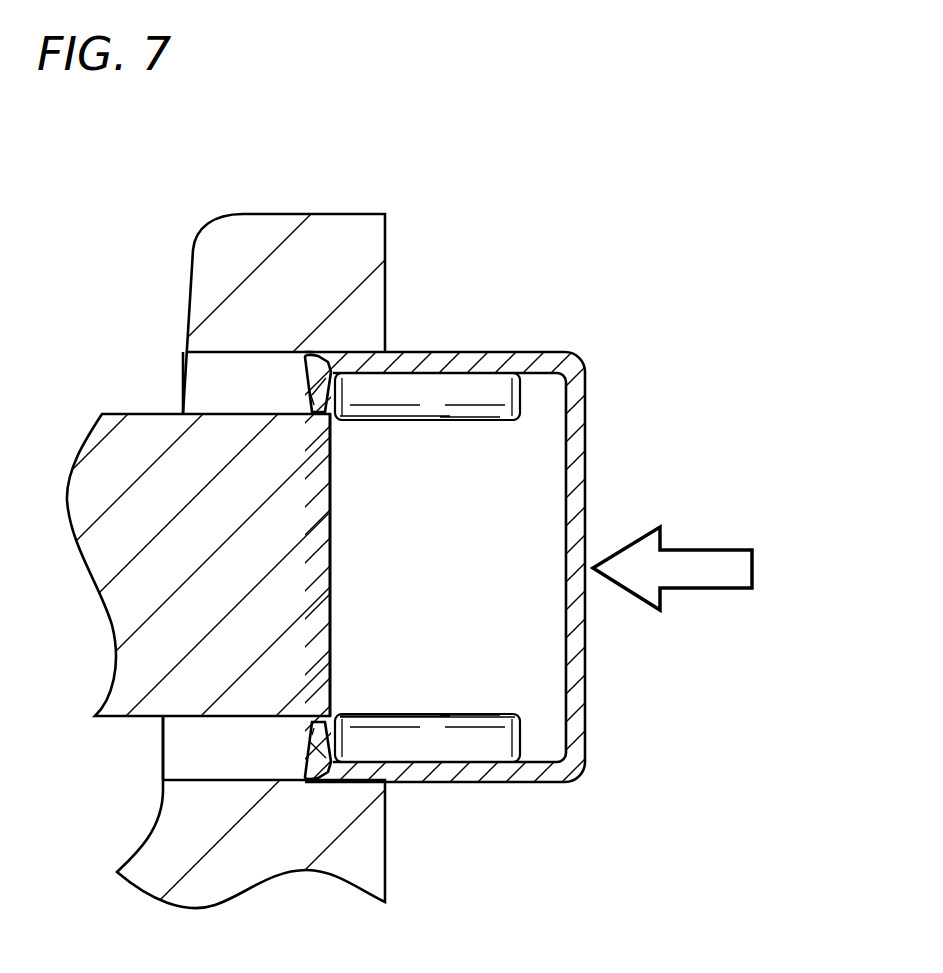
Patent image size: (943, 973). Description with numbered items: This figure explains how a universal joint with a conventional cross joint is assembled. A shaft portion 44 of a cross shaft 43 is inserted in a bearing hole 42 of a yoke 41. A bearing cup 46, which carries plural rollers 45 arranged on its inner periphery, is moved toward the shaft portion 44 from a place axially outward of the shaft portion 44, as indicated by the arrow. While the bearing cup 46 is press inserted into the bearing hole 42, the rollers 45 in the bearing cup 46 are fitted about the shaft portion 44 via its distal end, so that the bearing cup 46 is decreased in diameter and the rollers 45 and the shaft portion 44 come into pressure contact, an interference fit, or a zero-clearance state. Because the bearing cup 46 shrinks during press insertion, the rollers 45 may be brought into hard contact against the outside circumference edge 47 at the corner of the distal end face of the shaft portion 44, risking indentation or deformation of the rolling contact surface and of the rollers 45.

The yoke 41 is at (387, 289).
The bearing hole 42 is at (233, 354).
The cross shaft 43 is at (330, 612).
The shaft portion 44 is at (222, 718).
The rollers 45 is at (467, 424).
The bearing cup 46 is at (587, 693).
The outside circumference edge 47 is at (340, 413).